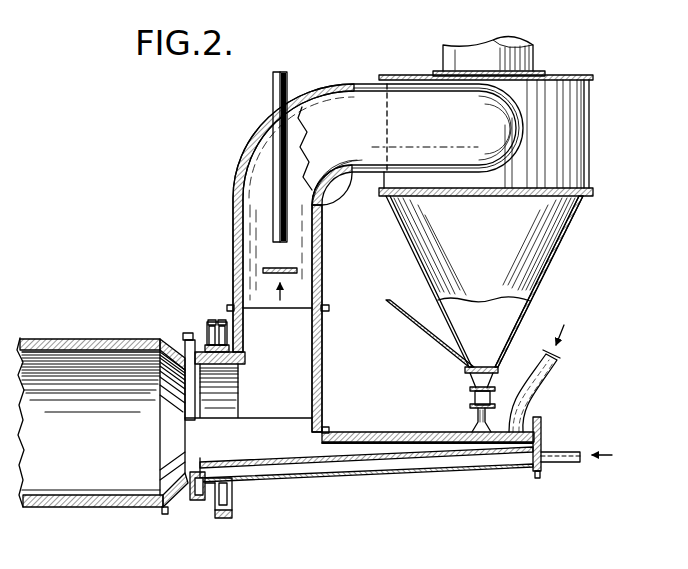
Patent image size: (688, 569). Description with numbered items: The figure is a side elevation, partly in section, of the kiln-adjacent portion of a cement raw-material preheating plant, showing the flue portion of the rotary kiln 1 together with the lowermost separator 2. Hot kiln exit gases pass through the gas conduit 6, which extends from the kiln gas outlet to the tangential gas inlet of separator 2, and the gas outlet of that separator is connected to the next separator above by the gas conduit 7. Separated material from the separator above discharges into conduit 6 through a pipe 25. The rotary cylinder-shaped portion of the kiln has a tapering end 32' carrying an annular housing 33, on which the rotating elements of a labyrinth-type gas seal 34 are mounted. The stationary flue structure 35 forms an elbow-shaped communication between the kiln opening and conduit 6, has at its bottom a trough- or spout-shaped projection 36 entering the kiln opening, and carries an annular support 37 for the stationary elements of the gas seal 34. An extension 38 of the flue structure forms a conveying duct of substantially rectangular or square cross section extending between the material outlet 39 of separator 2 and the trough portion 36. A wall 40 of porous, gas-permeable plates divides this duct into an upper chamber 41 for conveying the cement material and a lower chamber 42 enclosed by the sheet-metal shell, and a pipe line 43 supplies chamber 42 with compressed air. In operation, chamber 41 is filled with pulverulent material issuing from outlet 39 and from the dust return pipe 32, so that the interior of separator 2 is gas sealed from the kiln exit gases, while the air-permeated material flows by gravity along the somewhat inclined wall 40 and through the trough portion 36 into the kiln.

The rotary kiln 1 is at (97, 338).
The separator 2 is at (562, 239).
The gas conduit 6 is at (326, 258).
The gas conduit 7 is at (537, 62).
The pipe 25 is at (270, 96).
The dust return pipe 32 is at (554, 378).
The tapering end 32' is at (177, 355).
The annular housing 33 is at (193, 336).
The labyrinth-type gas seal 34 is at (233, 507).
The stationary flue structure 35 is at (326, 362).
The trough-shaped projection 36 is at (191, 503).
The annular support 37 is at (233, 491).
The extension of the flue structure 38 is at (404, 434).
The material outlet 39 is at (477, 414).
The wall 40 is at (374, 463).
The upper chamber 41 is at (359, 450).
The lower chamber 42 is at (426, 460).
The pipe line 43 is at (557, 466).